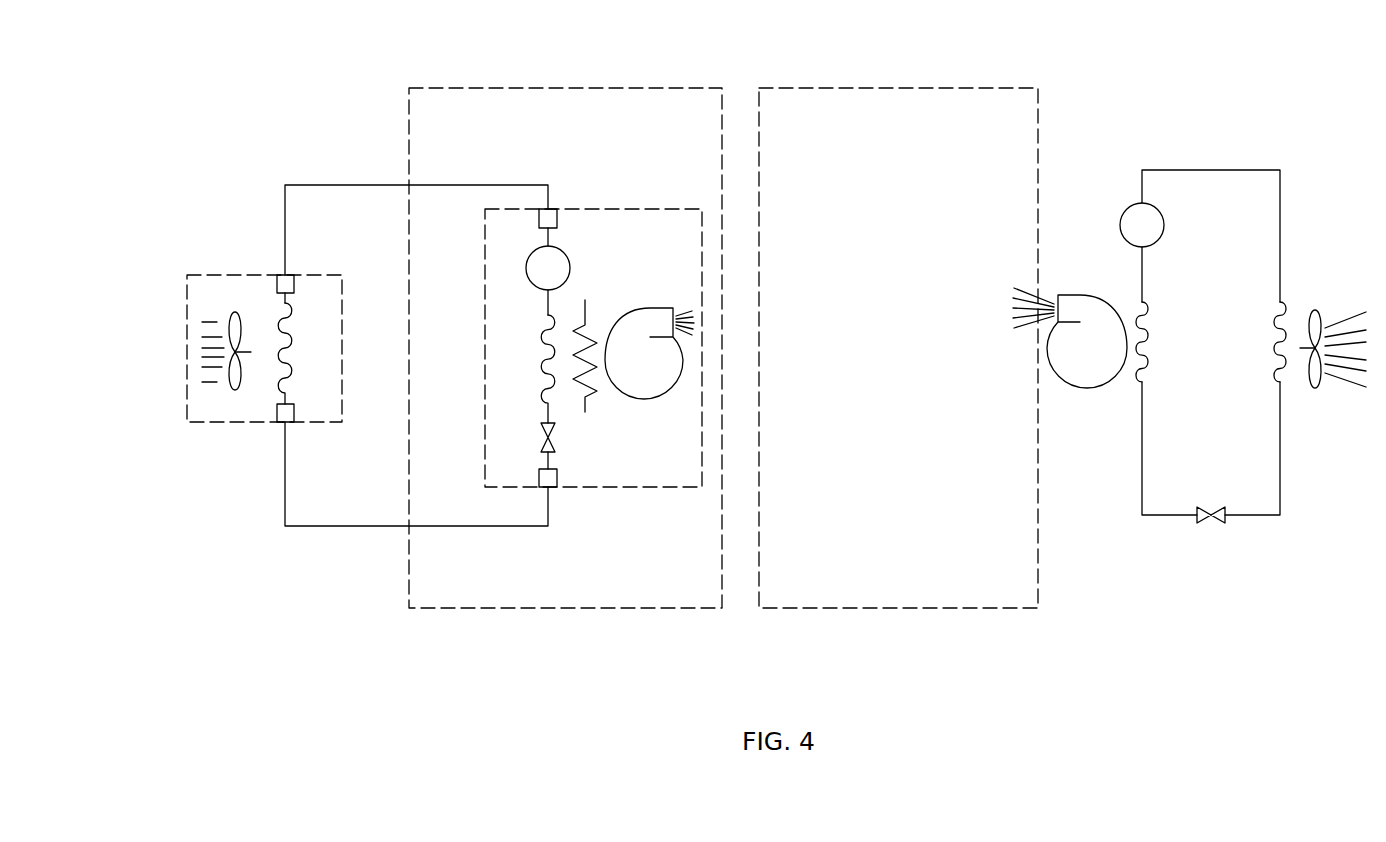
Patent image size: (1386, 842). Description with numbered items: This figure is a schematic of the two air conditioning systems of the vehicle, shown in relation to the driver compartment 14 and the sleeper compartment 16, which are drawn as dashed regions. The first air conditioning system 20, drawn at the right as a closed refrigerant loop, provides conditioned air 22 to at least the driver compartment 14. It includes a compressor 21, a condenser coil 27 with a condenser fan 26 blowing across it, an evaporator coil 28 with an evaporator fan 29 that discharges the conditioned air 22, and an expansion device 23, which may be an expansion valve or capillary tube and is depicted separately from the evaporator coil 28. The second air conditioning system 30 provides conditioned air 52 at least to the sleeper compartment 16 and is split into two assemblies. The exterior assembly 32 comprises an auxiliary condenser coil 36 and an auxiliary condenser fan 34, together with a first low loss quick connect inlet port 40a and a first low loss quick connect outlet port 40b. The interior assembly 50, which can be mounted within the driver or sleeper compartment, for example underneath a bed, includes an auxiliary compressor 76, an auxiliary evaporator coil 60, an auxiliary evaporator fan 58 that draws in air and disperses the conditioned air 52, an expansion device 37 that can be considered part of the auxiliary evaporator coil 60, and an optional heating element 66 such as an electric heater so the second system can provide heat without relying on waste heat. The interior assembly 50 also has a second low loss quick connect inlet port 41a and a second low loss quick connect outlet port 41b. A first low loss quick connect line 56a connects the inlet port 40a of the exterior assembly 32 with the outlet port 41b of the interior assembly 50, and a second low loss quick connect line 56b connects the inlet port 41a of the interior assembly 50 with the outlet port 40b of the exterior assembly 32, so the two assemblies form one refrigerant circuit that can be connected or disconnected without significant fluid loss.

The driver compartment 14 is at (822, 606).
The sleeper compartment 16 is at (640, 606).
The first air conditioning system 20 is at (1239, 128).
The compressor 21 is at (1120, 222).
The conditioned air 22 is at (1022, 290).
The expansion device 23 is at (1207, 522).
The condenser fan 26 is at (1320, 302).
The condenser coil 27 is at (1272, 364).
The evaporator coil 28 is at (1151, 325).
The evaporator fan 29 is at (1085, 388).
The second air conditioning system 30 is at (390, 418).
The exterior assembly 32 is at (204, 369).
The auxiliary condenser fan 34 is at (235, 390).
The auxiliary condenser coil 36 is at (294, 352).
The expansion device 37 is at (557, 440).
The first low loss quick connect inlet port 40a is at (280, 275).
The first low loss quick connect outlet port 40b is at (291, 422).
The second low loss quick connect inlet port 41a is at (558, 487).
The second low loss quick connect outlet port 41b is at (552, 209).
The interior assembly 50 is at (679, 495).
The conditioned air 52 is at (684, 310).
The first low loss quick connect line 56a is at (325, 184).
The second low loss quick connect line 56b is at (375, 526).
The auxiliary evaporator fan 58 is at (655, 400).
The auxiliary evaporator coil 60 is at (543, 362).
The heating element 66 is at (588, 320).
The auxiliary compressor 76 is at (570, 264).